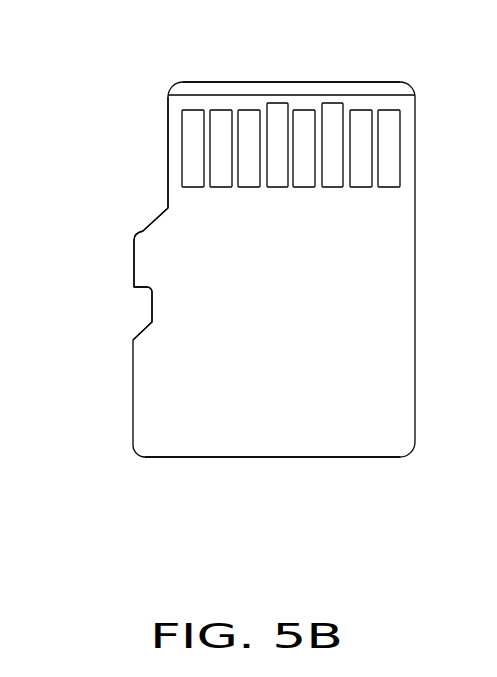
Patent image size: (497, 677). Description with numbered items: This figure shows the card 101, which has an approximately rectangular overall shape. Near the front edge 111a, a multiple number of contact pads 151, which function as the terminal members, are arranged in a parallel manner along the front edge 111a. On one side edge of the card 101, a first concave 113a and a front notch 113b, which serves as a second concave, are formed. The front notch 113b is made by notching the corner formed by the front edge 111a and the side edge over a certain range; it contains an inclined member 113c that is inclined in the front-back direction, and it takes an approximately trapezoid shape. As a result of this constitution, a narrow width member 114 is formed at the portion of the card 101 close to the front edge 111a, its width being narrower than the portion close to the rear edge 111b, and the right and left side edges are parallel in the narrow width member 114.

The card 101 is at (415, 209).
The contact pads 151 is at (361, 116).
The front edge 111a is at (246, 82).
The rear edge 111b is at (266, 457).
The narrow width member 114 is at (168, 140).
The front notch 113b is at (158, 198).
The inclined member 113c is at (140, 231).
The first concave 113a is at (138, 310).